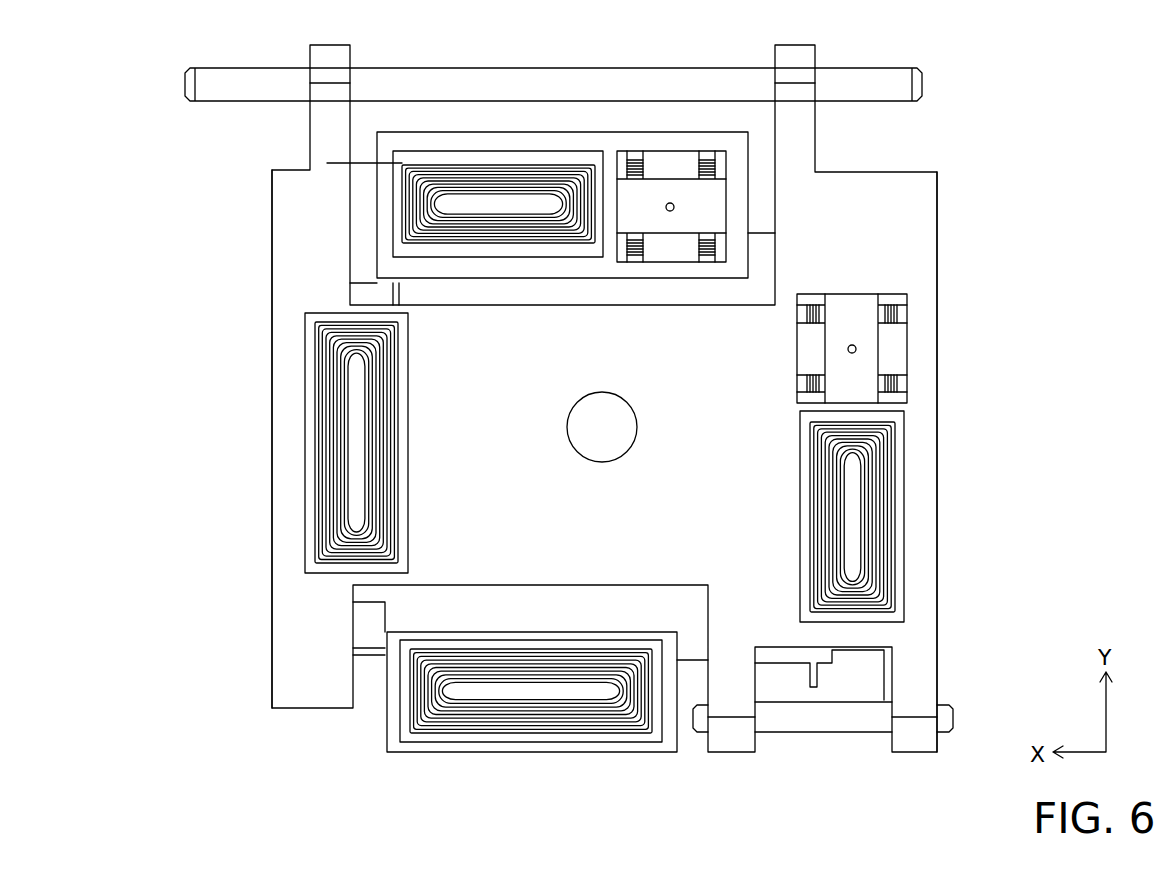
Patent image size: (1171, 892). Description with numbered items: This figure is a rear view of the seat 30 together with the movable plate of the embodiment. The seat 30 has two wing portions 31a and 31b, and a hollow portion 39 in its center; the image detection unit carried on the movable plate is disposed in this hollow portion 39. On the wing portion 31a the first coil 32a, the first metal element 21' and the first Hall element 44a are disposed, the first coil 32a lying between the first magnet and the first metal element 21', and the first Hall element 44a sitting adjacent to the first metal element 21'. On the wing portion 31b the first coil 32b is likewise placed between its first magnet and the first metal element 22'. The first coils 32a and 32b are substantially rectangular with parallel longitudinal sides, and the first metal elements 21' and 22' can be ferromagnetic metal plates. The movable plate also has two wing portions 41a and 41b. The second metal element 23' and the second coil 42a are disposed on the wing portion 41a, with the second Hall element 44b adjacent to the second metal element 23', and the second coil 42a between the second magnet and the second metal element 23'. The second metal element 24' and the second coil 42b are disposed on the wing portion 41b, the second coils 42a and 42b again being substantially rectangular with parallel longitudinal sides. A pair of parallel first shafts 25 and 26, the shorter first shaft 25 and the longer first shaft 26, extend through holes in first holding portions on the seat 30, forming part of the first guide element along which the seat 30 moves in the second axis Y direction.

The first metal element 21' is at (936, 516).
The first metal element 22' is at (274, 443).
The second metal element 23' is at (465, 139).
The second metal element 24' is at (531, 736).
The first shaft 25 is at (823, 723).
The first shaft 26 is at (922, 86).
The seat 30 is at (955, 193).
The wing portion 31a is at (955, 471).
The wing portion 31b is at (262, 458).
The first coil 32a is at (908, 540).
The first coil 32b is at (304, 528).
The hollow portion 39 is at (648, 433).
The wing portion 41a is at (584, 122).
The wing portion 41b is at (670, 758).
The second coil 42a is at (486, 152).
The second coil 42b is at (483, 745).
The first Hall element 44a is at (919, 350).
The second Hall element 44b is at (681, 152).